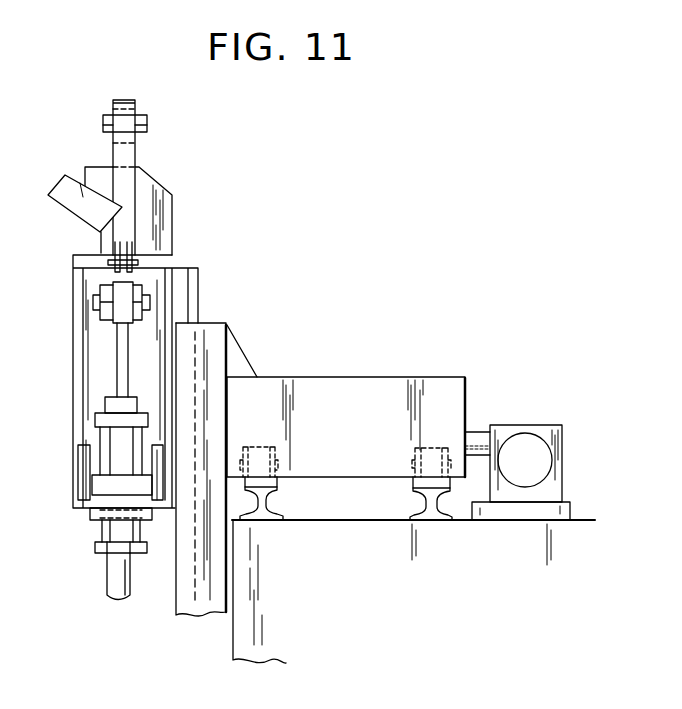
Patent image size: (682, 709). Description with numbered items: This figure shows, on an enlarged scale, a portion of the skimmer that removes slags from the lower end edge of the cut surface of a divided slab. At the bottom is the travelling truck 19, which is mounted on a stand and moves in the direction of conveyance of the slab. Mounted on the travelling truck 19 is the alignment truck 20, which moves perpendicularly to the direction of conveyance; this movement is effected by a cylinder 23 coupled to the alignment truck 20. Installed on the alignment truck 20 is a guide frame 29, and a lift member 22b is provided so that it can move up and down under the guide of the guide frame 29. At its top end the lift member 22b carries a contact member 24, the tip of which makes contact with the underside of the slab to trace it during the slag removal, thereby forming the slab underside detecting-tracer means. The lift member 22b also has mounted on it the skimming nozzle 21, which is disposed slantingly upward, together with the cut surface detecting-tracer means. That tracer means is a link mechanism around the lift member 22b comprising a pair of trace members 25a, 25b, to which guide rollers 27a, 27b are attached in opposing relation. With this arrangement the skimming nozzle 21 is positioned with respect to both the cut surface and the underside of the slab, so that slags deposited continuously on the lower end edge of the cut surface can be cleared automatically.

The travelling truck 19 is at (240, 617).
The alignment truck 20 is at (375, 388).
The skimming nozzle 21 is at (70, 202).
The lift member 22b is at (97, 350).
The cylinder 23 is at (523, 442).
The contact member 24 is at (95, 168).
The trace member 25a is at (190, 248).
The trace member 25b is at (135, 139).
The guide roller 27a is at (173, 206).
The guide roller 27b is at (147, 114).
The guide frame 29 is at (213, 335).